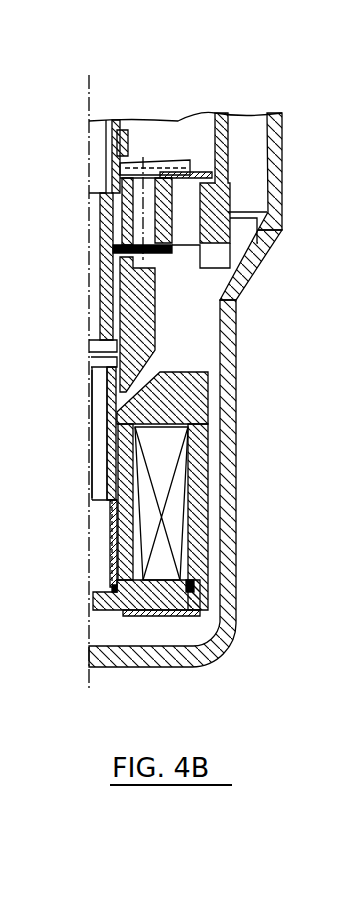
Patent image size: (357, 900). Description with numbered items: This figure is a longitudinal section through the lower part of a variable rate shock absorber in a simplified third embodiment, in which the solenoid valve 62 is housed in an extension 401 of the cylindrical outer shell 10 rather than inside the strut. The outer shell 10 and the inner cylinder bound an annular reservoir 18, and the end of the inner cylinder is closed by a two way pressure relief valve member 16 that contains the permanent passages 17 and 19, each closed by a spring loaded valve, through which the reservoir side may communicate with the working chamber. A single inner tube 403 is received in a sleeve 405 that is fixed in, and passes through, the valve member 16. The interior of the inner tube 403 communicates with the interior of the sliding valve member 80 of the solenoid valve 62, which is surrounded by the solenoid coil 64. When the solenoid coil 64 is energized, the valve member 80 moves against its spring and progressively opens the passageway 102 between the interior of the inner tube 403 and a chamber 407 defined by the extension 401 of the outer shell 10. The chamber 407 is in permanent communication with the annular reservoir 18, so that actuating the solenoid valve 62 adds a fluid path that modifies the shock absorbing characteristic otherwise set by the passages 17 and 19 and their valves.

The outer shell 10 is at (274, 152).
The valve member 16 is at (245, 208).
The passage 17 is at (150, 195).
The annular reservoir 18 is at (256, 146).
The passage 19 is at (190, 207).
The solenoid valve 62 is at (184, 371).
The solenoid coil 64 is at (180, 478).
The valve member 80 is at (97, 448).
The passageway 102 is at (148, 352).
The extension 401 is at (230, 523).
The inner tube 403 is at (122, 121).
The sleeve 405 is at (100, 305).
The chamber 407 is at (215, 322).